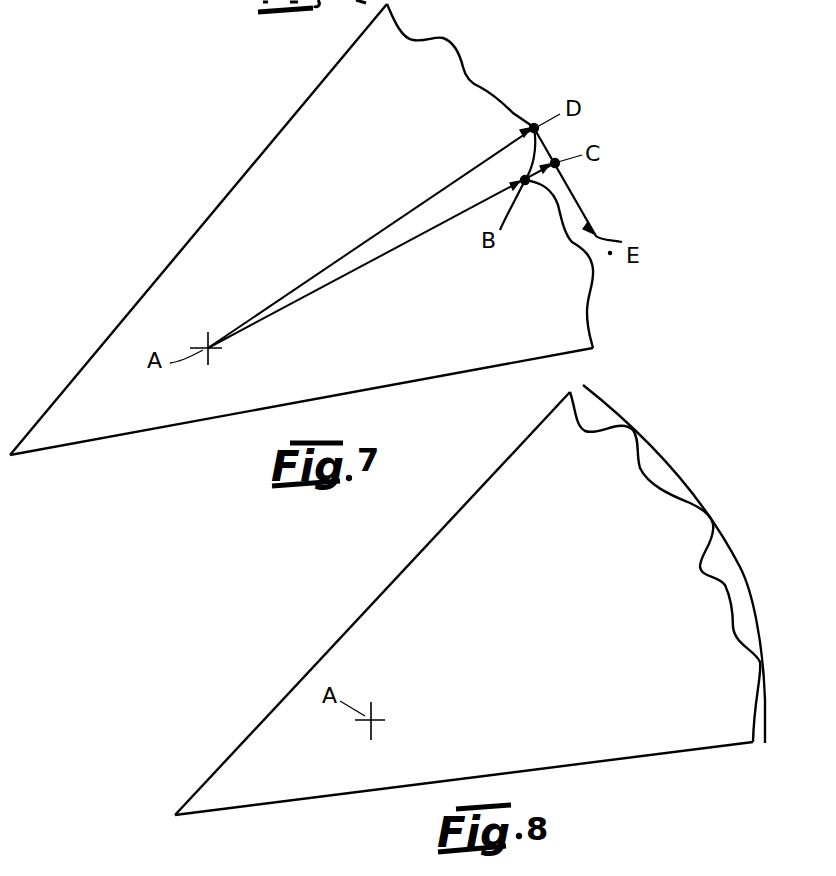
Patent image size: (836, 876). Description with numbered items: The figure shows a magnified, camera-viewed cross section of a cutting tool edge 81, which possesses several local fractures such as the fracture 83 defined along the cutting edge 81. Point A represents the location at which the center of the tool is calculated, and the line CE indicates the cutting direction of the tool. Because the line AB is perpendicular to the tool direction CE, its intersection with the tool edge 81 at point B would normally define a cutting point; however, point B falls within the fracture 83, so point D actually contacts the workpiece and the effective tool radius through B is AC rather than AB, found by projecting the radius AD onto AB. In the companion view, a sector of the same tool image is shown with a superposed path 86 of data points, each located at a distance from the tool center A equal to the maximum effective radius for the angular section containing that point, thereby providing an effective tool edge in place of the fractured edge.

In FIG. 7, the tool edge 81 is at (462, 58).
In FIG. 8, the tool edge 81 is at (640, 459).
In FIG. 7, the fracture 83 is at (541, 187).
In FIG. 8, the fracture 83 is at (718, 570).
In FIG. 8, the path 86 is at (700, 491).